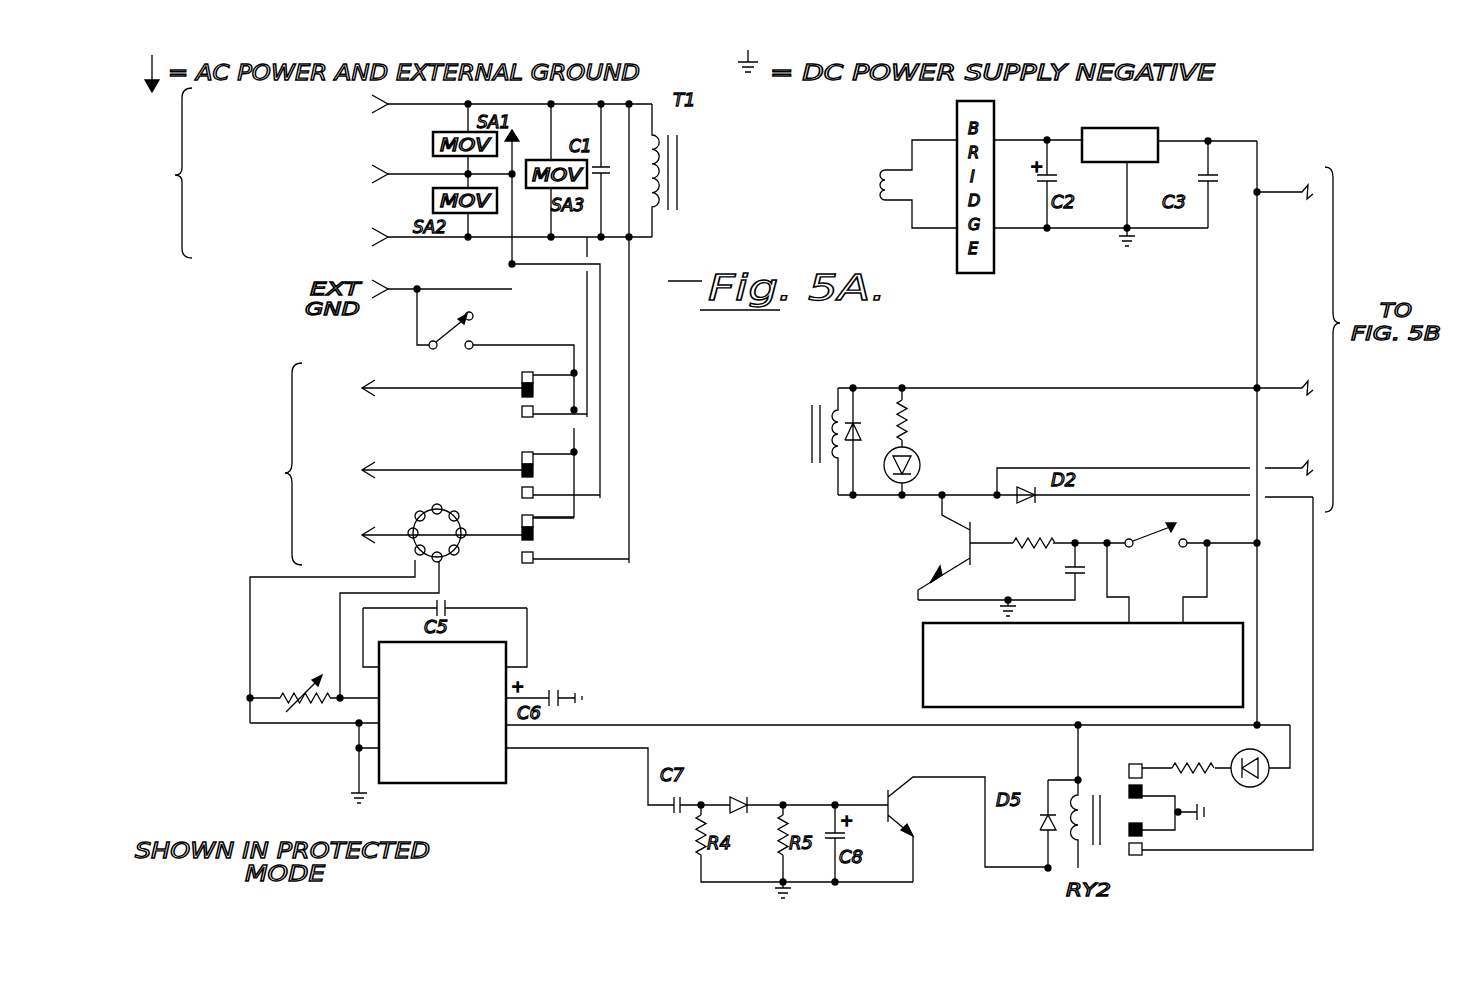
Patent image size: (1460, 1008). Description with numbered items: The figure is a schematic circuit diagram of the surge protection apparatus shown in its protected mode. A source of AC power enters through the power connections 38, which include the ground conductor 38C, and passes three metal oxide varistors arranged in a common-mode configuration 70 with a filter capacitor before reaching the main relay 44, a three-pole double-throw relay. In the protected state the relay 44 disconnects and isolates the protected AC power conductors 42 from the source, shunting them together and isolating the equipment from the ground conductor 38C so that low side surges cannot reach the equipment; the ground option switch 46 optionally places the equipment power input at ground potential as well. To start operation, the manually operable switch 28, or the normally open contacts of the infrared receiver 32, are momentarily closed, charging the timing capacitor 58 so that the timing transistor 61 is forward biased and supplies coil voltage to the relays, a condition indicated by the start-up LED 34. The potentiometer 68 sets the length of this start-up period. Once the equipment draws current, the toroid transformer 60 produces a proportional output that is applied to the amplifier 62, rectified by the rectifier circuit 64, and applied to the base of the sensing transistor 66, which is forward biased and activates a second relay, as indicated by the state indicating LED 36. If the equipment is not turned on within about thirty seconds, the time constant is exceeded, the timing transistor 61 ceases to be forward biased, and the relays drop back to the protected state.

The power connections 38 is at (160, 185).
The ground conductor 38C is at (404, 174).
The switch SW1 46 is at (417, 345).
The conductors 42 is at (278, 472).
The toroid transformer T2 60 is at (408, 528).
The potentiometer 68 is at (282, 712).
The amplifier 62 is at (452, 777).
The rectifier circuit 64 is at (760, 752).
The transistor Q1 66 is at (900, 752).
The relay RY1 44 is at (838, 335).
The start-up state LED 34 is at (940, 428).
The common-mode configuration 70 is at (1092, 110).
The switch SW2 28 is at (1192, 512).
The transistor Q2 61 is at (922, 588).
The capacitor C4 58 is at (1032, 568).
The infrared receiver 32 is at (923, 660).
The state indicating LED 36 is at (1248, 815).